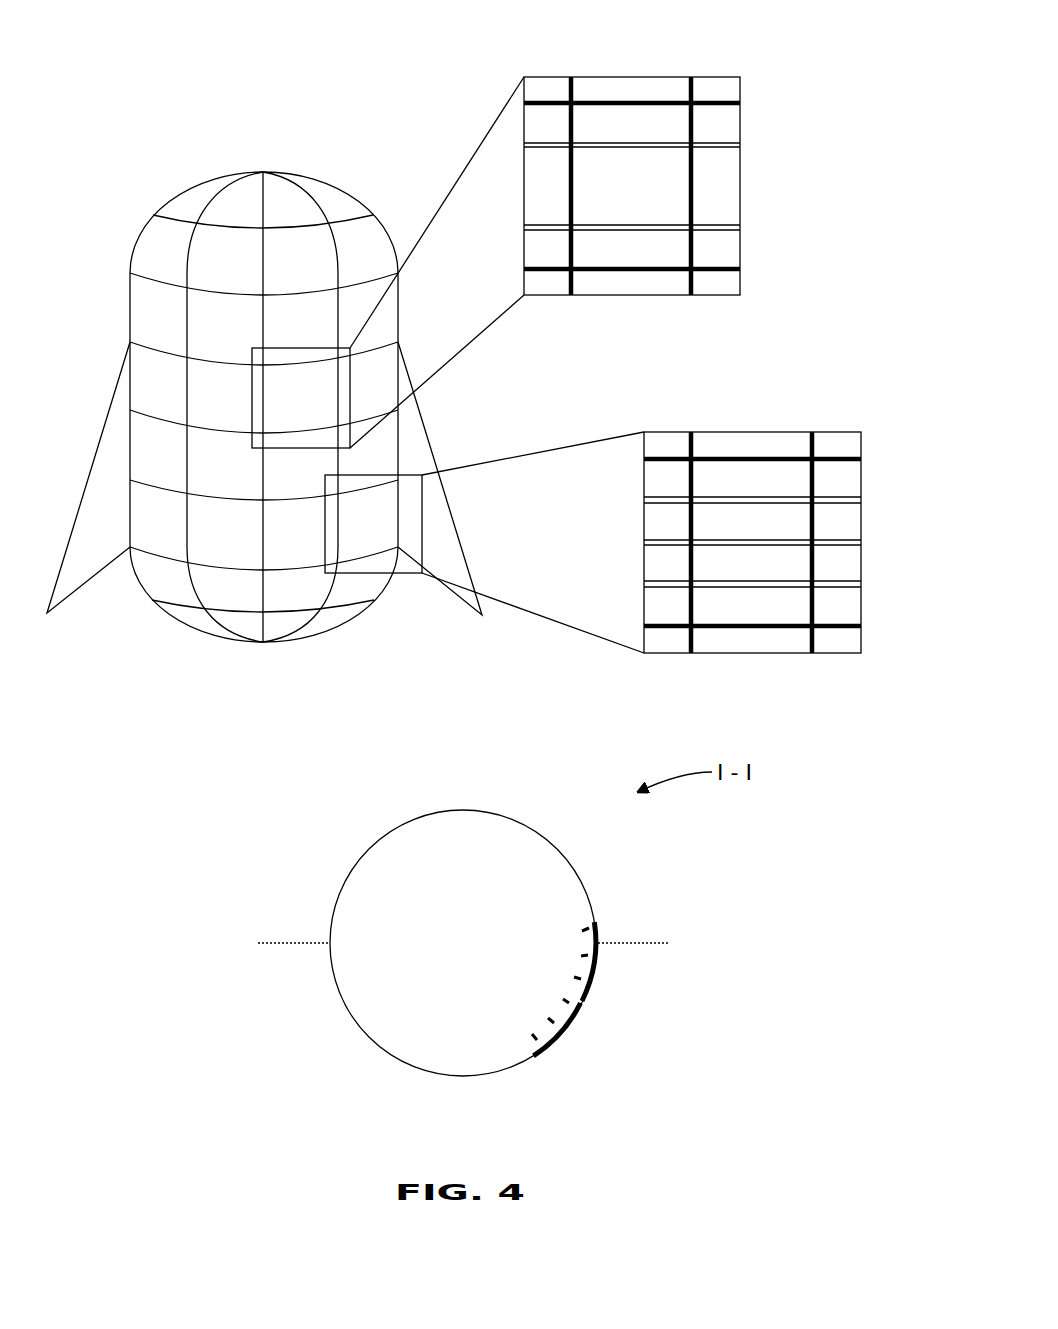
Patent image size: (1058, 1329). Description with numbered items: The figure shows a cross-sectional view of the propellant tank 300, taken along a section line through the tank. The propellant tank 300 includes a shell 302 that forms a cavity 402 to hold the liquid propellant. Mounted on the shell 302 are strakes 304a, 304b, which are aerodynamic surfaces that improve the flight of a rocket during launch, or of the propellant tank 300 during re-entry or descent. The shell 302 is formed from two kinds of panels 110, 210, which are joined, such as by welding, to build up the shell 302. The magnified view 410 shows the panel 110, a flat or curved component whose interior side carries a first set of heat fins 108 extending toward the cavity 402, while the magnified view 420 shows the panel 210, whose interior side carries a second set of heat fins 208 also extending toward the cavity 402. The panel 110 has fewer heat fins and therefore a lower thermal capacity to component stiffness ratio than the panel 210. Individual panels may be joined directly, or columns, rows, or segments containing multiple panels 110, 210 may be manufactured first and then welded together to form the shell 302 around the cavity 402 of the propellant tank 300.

The propellant tank 300 is at (106, 171).
The shell 302 is at (140, 235).
The cavity 402 is at (153, 318).
The strake 304a is at (88, 583).
The strake 304b is at (435, 433).
The panel 210 is at (632, 94).
The magnified view 420 is at (740, 190).
The panel 110 is at (759, 447).
The magnified view 410 is at (861, 522).
The heat fins 108 is at (585, 924).
The heat fins 208 is at (532, 1032).